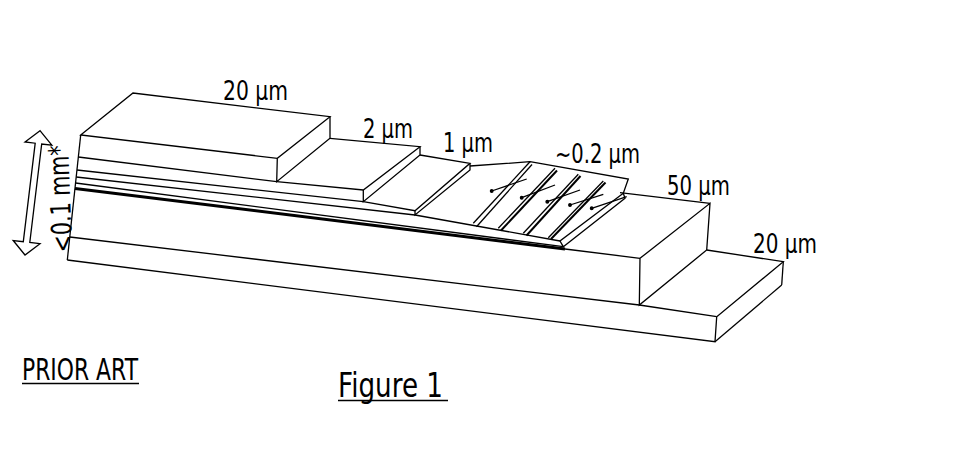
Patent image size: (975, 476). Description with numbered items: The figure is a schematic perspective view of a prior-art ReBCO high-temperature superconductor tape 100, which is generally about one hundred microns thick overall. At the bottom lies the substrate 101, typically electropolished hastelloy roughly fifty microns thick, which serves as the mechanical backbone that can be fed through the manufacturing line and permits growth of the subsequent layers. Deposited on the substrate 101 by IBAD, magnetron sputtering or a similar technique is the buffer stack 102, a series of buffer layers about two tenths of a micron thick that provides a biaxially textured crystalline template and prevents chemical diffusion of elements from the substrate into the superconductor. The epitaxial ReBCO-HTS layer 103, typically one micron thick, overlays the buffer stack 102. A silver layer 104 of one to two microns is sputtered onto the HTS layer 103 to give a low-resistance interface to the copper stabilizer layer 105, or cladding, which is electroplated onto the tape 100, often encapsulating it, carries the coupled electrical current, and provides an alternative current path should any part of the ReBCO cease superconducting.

The tape 100 is at (285, 320).
The substrate 101 is at (657, 225).
The buffer stack 102 is at (542, 162).
The ReBCO-HTS layer 103 is at (435, 181).
The silver layer 104 is at (354, 160).
The copper stabilizer layer 105 is at (212, 121).